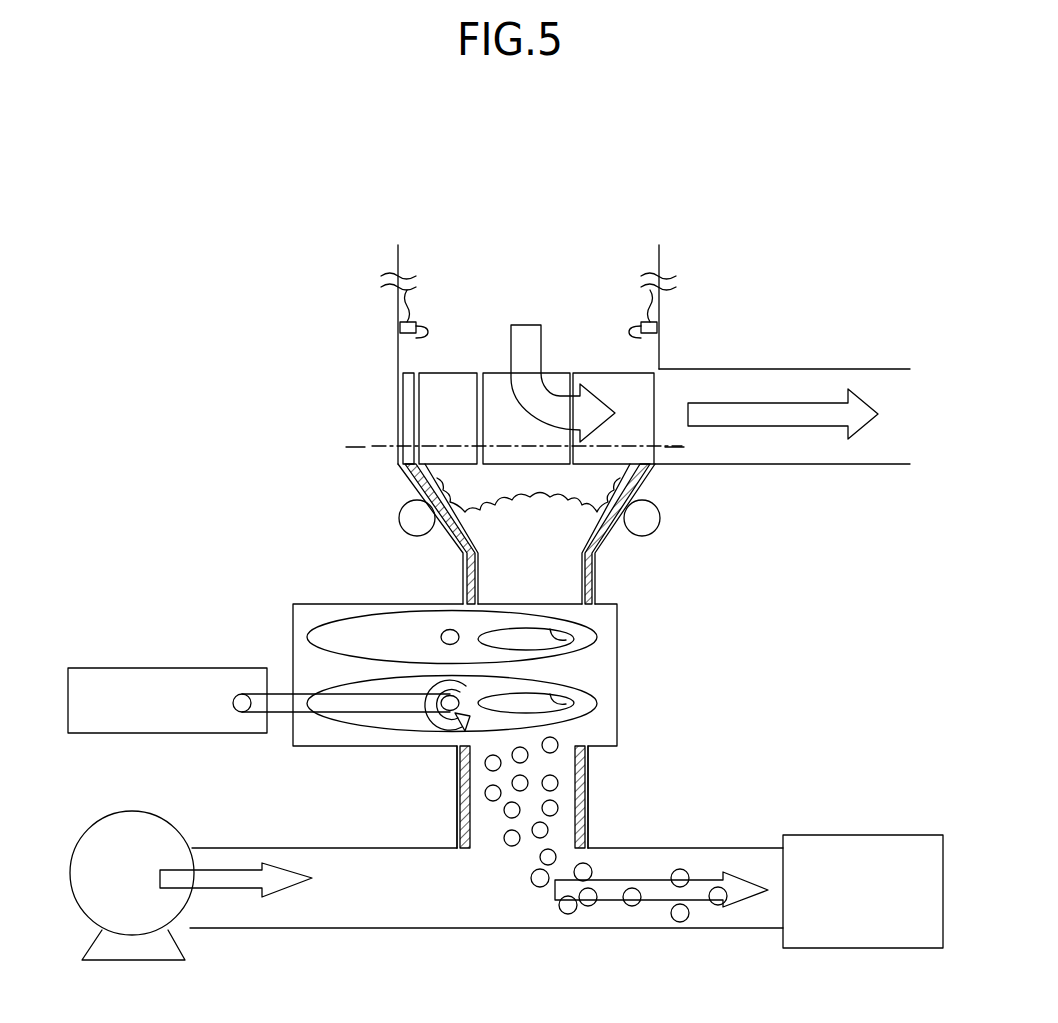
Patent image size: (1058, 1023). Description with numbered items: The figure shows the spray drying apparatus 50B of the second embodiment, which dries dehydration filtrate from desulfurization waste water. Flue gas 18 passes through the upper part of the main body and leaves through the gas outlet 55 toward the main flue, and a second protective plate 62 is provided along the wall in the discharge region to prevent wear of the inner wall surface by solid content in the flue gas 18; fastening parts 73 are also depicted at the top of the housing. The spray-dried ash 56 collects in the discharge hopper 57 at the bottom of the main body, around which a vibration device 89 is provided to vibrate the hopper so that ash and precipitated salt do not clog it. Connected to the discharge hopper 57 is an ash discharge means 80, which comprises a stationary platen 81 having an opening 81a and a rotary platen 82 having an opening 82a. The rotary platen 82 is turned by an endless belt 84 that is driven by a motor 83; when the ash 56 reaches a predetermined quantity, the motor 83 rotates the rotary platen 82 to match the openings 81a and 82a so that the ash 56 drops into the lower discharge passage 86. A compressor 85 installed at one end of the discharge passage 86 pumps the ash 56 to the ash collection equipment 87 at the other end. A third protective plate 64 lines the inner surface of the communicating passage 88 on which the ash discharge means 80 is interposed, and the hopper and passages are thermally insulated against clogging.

The spray drying apparatus 50B is at (517, 238).
The fastener 73 is at (410, 336).
The second protective plate 62 is at (409, 394).
The gas outlet 55 is at (727, 369).
The flue gas 18 is at (812, 412).
The discharge hopper 57 is at (660, 484).
The vibration device 89 is at (660, 520).
The ash 56 is at (495, 563).
The third protective plate 64 is at (588, 567).
The ash discharge means 80 is at (292, 624).
The stationary platen 81 is at (600, 638).
The opening 81a is at (570, 640).
The rotary platen 82 is at (600, 704).
The opening 82a is at (575, 704).
The motor 83 is at (232, 668).
The endless belt 84 is at (280, 714).
The compressor 85 is at (172, 822).
The discharge passage 86 is at (355, 929).
The ash collection equipment 87 is at (890, 835).
The communicating passage 88 is at (457, 802).